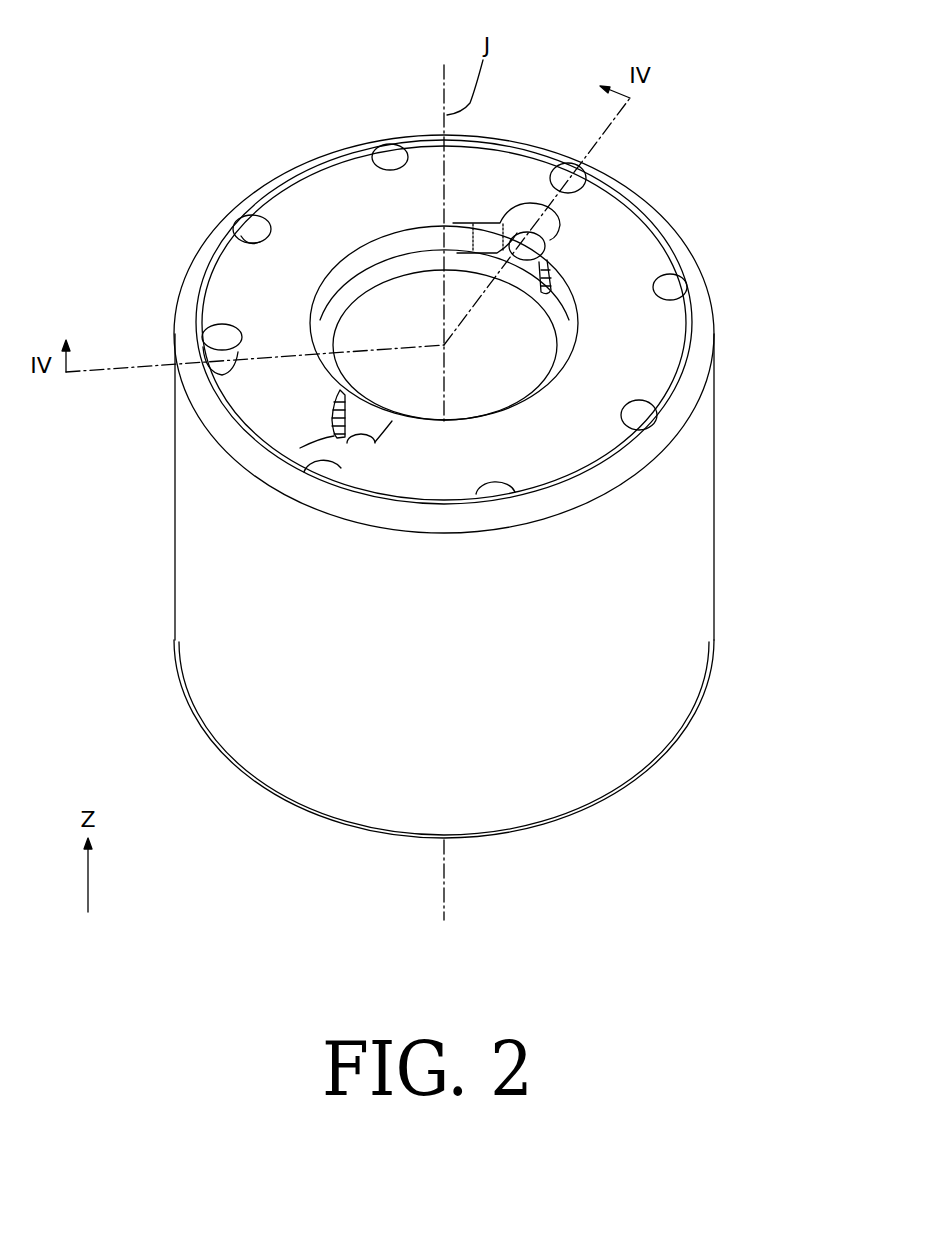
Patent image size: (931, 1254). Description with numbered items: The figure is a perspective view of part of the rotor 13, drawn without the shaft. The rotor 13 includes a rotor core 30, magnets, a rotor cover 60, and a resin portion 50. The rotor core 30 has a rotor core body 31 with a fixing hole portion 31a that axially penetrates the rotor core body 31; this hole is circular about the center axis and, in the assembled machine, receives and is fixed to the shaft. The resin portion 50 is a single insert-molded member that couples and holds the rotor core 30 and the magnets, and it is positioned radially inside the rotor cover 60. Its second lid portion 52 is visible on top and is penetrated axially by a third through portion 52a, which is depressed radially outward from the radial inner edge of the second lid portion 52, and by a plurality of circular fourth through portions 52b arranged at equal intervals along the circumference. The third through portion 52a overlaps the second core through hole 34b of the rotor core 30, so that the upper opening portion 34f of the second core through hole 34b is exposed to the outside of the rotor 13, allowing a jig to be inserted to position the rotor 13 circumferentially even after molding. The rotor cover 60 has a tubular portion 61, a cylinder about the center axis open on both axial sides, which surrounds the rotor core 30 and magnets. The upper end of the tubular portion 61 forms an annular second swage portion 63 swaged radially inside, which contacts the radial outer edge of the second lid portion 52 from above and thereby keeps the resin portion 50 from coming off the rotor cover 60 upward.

The rotor 13 is at (735, 135).
The rotor core 30 is at (385, 264).
The rotor core body 31 is at (457, 262).
The fixing hole portion 31a is at (537, 345).
The second core through hole 34b is at (565, 272).
The opening portion 34f is at (527, 267).
The resin portion 50 is at (516, 168).
The second lid portion 52 is at (597, 227).
The third through portion 52a is at (530, 203).
The fourth through portion 52b is at (388, 150).
The rotor cover 60 is at (725, 568).
The tubular portion 61 is at (695, 635).
The second swage portion 63 is at (705, 330).